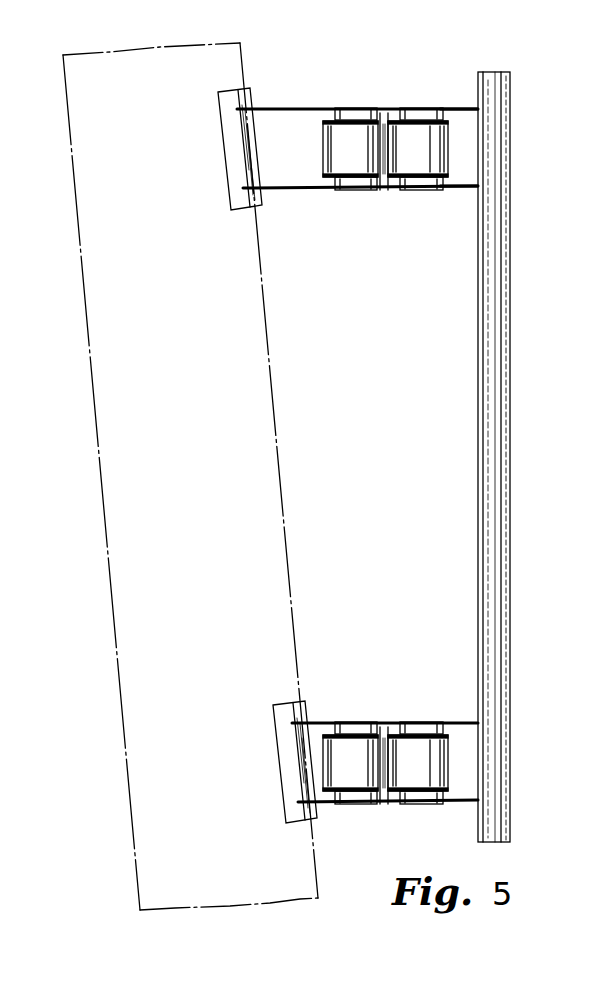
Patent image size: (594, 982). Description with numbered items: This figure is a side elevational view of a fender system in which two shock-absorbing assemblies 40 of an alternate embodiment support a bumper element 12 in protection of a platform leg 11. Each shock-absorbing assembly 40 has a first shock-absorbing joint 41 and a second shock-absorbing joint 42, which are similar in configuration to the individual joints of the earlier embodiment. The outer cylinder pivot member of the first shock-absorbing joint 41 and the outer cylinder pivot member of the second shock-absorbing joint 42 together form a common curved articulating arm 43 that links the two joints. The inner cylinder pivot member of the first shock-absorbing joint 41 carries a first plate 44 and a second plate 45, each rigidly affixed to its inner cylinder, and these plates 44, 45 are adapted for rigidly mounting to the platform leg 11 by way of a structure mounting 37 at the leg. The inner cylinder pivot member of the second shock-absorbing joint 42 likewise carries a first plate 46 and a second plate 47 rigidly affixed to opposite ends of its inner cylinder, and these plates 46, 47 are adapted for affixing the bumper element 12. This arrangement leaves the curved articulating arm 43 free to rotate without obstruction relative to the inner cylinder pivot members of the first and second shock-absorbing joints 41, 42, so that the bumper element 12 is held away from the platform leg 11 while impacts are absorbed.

The platform leg 11 is at (280, 448).
The bumper element 12 is at (510, 415).
The structure mounting 37 is at (220, 130).
The shock-absorbing assembly 40 is at (380, 96).
The first shock-absorbing joint 41 is at (340, 200).
The second shock-absorbing joint 42 is at (416, 200).
The curved articulating arm 43 is at (386, 180).
The first plate 44 is at (288, 108).
The second plate 45 is at (291, 192).
The first plate 46 is at (452, 106).
The second plate 47 is at (452, 192).